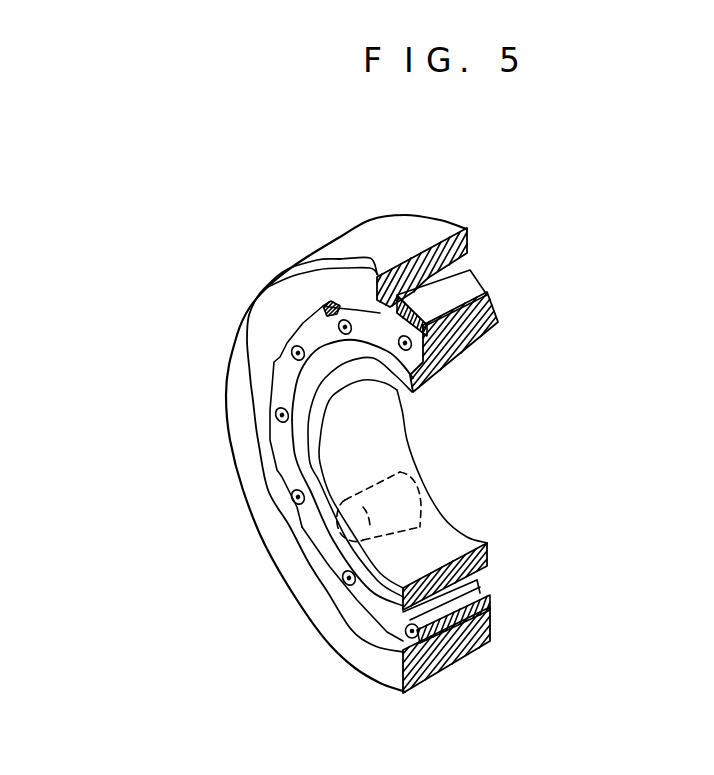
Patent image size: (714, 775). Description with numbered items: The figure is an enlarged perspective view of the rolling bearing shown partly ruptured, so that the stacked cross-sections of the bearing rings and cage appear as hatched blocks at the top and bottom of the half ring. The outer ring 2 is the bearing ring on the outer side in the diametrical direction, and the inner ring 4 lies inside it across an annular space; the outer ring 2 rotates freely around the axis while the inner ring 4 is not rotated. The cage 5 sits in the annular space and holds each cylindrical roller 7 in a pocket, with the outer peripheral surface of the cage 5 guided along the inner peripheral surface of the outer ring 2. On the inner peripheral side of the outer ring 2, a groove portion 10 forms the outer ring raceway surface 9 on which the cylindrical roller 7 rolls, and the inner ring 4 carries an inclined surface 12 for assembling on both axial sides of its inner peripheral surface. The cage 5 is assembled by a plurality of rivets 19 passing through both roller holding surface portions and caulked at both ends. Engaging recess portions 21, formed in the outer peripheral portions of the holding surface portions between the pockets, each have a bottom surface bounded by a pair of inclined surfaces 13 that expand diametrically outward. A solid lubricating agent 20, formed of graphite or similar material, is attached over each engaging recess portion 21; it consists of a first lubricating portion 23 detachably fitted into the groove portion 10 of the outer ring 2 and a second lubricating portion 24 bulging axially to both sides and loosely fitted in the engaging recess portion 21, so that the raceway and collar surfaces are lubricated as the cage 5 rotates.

The outer ring 2 is at (467, 233).
The inner ring 4 is at (500, 323).
The cage 5 is at (278, 372).
The cylindrical roller 7 is at (413, 483).
The outer ring raceway surface 9 is at (413, 280).
The groove portion 10 is at (405, 268).
The inclined surface 12 is at (297, 383).
The inclined surface 13 is at (302, 527).
The rivet 19 is at (492, 582).
The solid lubricating agent 20 is at (532, 325).
The engaging recess portion 21 is at (333, 305).
The first lubricating portion 23 is at (472, 280).
The second lubricating portion 24 is at (490, 284).